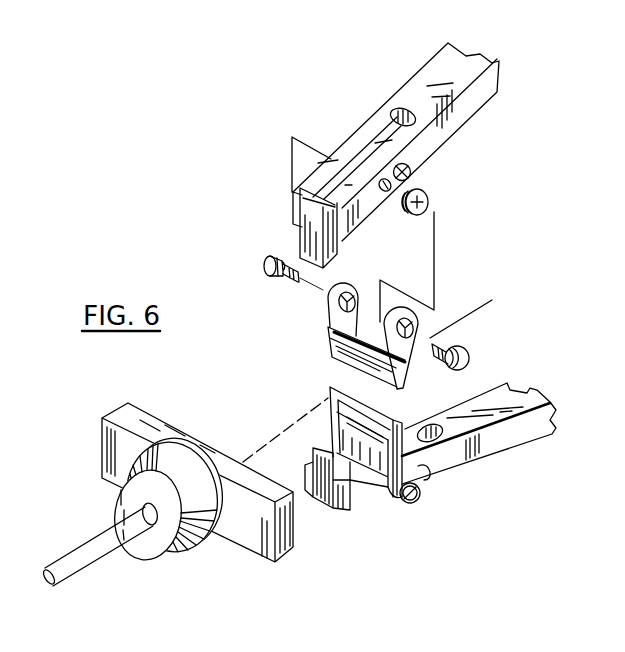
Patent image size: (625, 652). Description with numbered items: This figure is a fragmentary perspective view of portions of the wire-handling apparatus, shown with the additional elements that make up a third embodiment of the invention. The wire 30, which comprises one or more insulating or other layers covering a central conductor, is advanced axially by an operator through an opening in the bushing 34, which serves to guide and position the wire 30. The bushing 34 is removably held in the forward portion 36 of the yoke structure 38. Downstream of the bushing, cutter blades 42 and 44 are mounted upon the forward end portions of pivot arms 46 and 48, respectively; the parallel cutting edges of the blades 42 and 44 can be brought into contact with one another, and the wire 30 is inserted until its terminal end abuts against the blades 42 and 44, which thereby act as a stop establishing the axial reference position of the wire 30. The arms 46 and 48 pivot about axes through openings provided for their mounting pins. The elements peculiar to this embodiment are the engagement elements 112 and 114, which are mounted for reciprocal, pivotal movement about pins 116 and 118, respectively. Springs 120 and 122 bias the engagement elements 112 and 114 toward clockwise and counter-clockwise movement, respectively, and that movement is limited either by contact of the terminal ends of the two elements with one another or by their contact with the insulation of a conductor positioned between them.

The wire 30 is at (90, 568).
The bushing 34 is at (182, 552).
The forward portion 36 is at (212, 548).
The yoke structure 38 is at (266, 548).
The cutter blade 42 is at (298, 237).
The cutter blade 44 is at (306, 453).
The pivot arm 46 is at (408, 87).
The pivot arm 48 is at (516, 433).
The engagement element 112 is at (327, 350).
The engagement element 114 is at (380, 420).
The pin 116 is at (265, 264).
The pin 118 is at (413, 503).
The spring 120 is at (429, 203).
The spring 122 is at (423, 468).